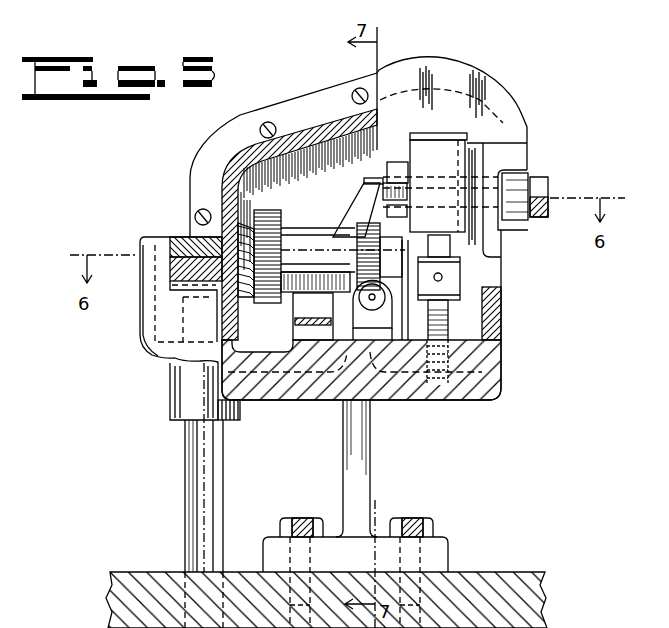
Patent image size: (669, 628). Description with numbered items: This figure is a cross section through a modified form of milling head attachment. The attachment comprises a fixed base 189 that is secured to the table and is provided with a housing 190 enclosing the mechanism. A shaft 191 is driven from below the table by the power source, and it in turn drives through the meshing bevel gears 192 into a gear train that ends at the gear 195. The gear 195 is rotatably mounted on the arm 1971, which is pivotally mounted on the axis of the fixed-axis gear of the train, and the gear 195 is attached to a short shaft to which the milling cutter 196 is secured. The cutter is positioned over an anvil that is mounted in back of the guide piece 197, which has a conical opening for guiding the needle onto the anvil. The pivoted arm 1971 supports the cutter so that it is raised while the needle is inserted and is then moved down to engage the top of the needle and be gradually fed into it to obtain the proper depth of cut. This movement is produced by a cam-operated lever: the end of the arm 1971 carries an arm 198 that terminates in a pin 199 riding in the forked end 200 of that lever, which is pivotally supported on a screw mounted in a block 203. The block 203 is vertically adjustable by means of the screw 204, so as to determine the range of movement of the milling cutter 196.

The fixed base 189 is at (372, 465).
The housing 190 is at (500, 393).
The shaft 191 is at (192, 464).
The bevel gears 192 is at (175, 297).
The gear 195 is at (348, 228).
The milling cutter 196 is at (370, 216).
The guide piece 197 is at (373, 318).
The arm 1971 is at (297, 228).
The arm 198 is at (368, 178).
The pin 199 is at (400, 182).
The forked end 200 is at (406, 212).
The block 203 is at (452, 168).
The screw 204 is at (462, 290).